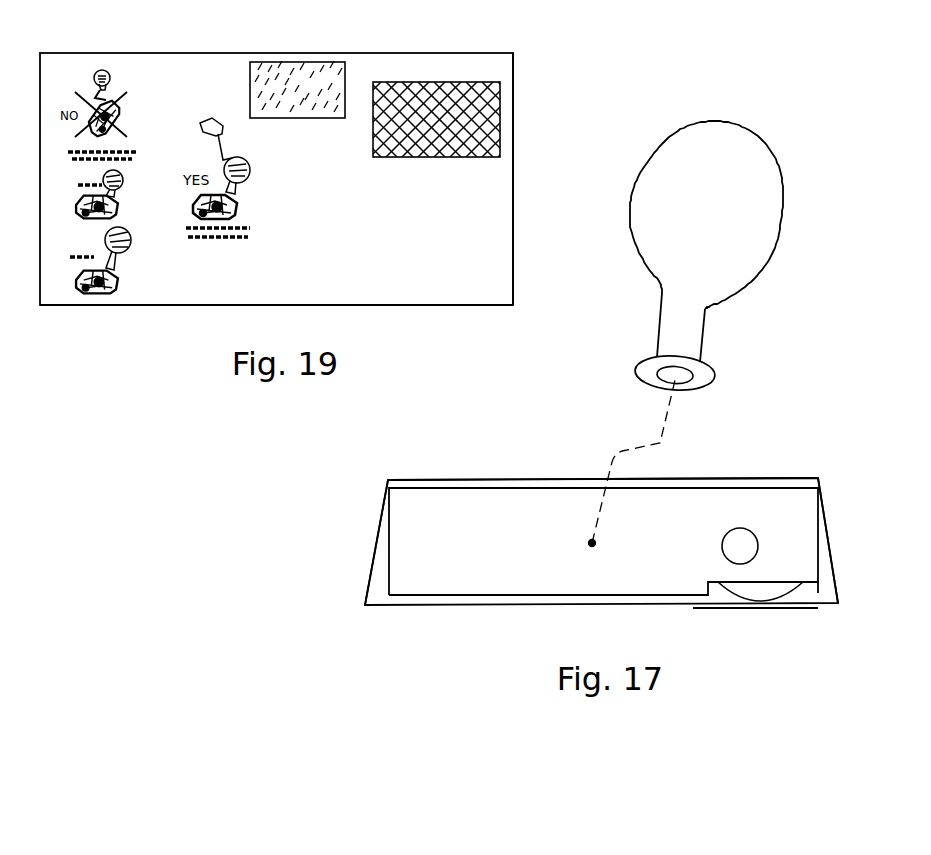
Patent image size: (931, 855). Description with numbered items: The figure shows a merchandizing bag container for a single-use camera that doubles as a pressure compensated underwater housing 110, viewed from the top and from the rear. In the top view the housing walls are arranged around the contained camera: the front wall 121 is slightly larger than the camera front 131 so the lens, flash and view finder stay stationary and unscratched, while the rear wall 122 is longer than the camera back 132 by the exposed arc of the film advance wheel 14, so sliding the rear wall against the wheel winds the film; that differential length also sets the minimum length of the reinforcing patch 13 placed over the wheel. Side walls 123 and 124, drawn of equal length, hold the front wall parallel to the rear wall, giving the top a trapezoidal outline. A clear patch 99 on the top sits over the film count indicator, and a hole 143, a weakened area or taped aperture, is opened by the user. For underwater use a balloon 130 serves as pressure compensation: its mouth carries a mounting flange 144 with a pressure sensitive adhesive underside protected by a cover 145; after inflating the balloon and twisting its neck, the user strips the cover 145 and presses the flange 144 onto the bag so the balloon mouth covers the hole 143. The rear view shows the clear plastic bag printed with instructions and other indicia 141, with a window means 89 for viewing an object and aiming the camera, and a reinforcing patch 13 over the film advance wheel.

In FIG. 19, the reinforcing patch 13 is at (500, 100).
In FIG. 17, the reinforcing patch 13 is at (757, 610).
In FIG. 17, the film advance wheel 14 is at (788, 595).
In FIG. 19, the window means 89 is at (297, 62).
In FIG. 17, the clear patch 99 is at (741, 545).
In FIG. 19, the container bag 110 is at (513, 160).
In FIG. 17, the container bag 110 is at (485, 480).
In FIG. 17, the front wall 121 is at (393, 480).
In FIG. 19, the rear wall 122 is at (152, 53).
In FIG. 17, the rear wall 122 is at (382, 605).
In FIG. 17, the side wall 123 is at (830, 537).
In FIG. 17, the side wall 124 is at (370, 580).
In FIG. 17, the balloon 130 is at (782, 177).
In FIG. 17, the camera front 131 is at (445, 488).
In FIG. 17, the camera back 132 is at (462, 595).
In FIG. 19, the indicia 141 is at (102, 278).
In FIG. 17, the hole 143 is at (591, 540).
In FIG. 17, the mounting flange 144 is at (642, 358).
In FIG. 17, the protective cover 145 is at (647, 376).